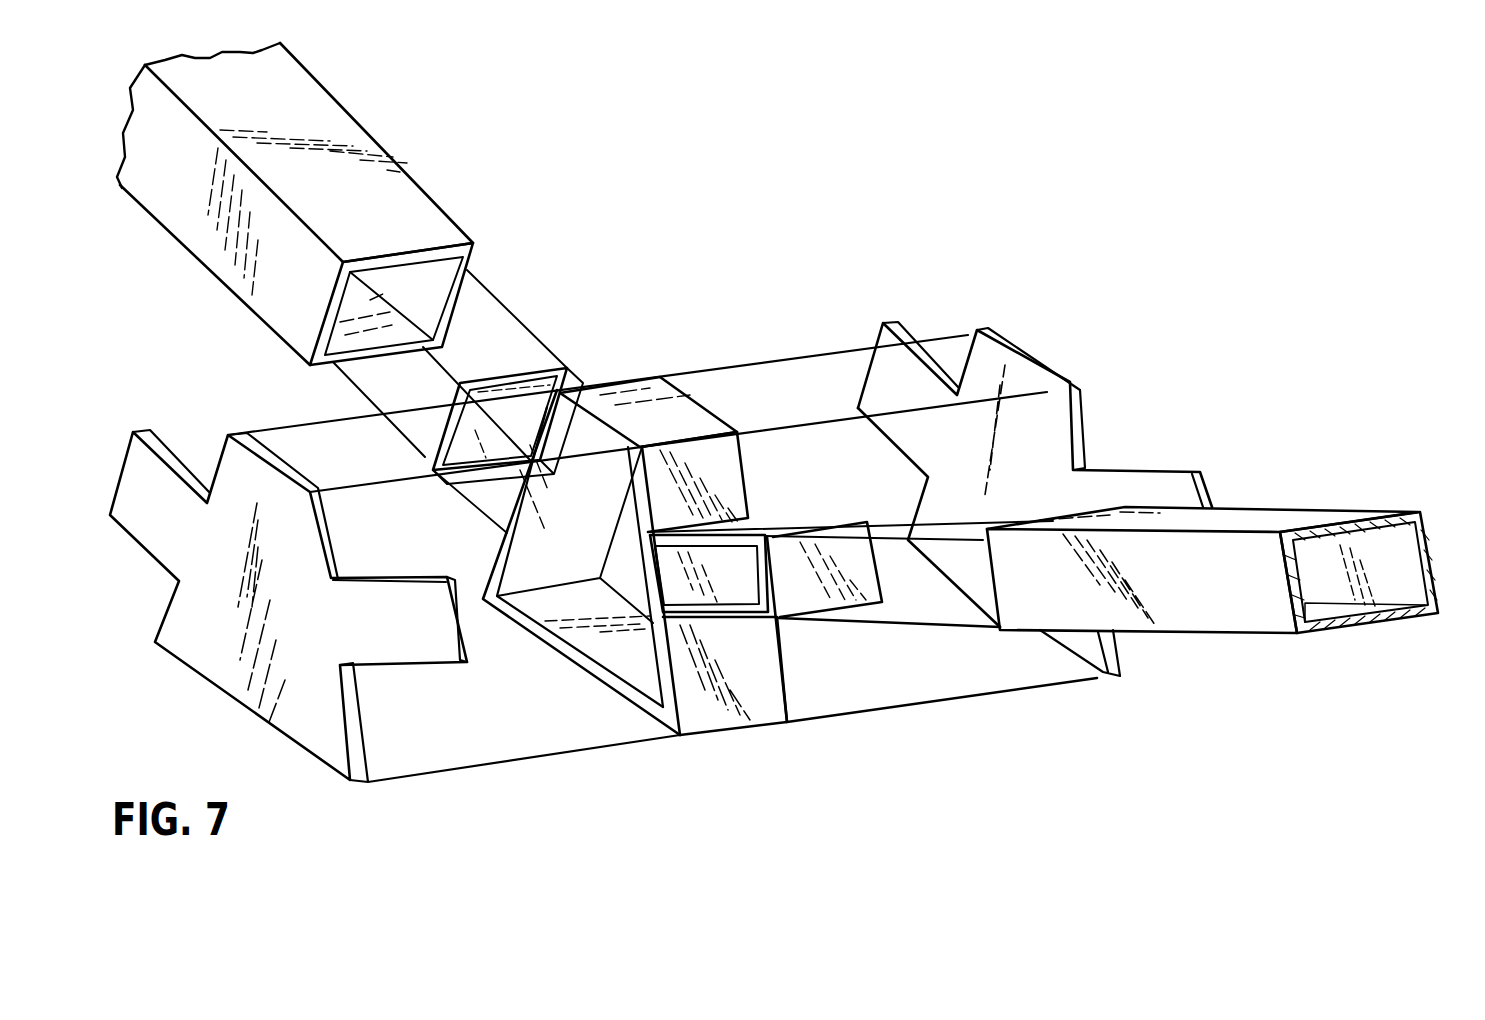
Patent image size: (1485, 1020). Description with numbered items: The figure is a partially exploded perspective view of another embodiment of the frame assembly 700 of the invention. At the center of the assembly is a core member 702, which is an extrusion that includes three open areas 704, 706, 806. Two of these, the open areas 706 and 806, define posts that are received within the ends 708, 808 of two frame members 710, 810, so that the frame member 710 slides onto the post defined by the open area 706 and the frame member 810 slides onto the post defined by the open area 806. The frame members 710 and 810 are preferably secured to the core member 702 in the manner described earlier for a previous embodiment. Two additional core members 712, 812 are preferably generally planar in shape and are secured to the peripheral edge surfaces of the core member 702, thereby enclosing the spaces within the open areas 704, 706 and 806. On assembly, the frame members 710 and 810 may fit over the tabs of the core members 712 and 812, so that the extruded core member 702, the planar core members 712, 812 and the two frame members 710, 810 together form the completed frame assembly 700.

The frame assembly 700 is at (583, 320).
The core member 702 is at (634, 397).
The open area 704 is at (627, 660).
The open area 706 is at (500, 494).
The end 708 is at (413, 198).
The frame member 710 is at (200, 252).
The core member 712 is at (135, 460).
The open area 806 is at (725, 585).
The end 808 is at (1250, 520).
The frame member 810 is at (1192, 624).
The core member 812 is at (1037, 353).